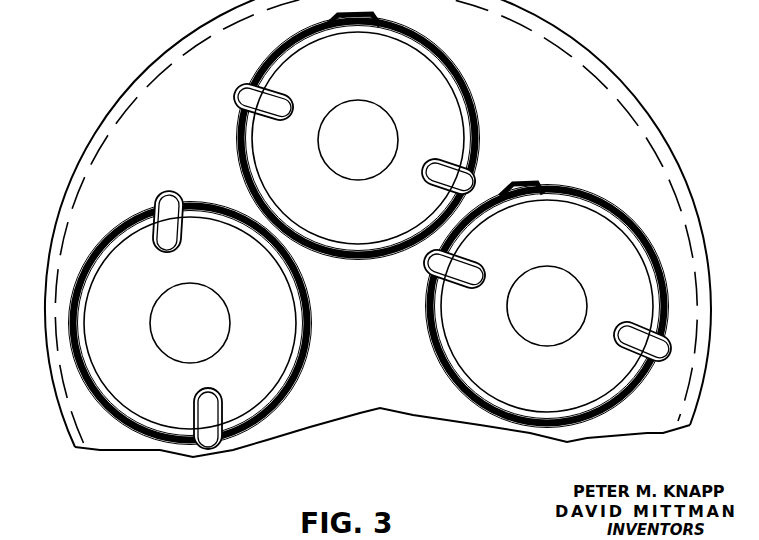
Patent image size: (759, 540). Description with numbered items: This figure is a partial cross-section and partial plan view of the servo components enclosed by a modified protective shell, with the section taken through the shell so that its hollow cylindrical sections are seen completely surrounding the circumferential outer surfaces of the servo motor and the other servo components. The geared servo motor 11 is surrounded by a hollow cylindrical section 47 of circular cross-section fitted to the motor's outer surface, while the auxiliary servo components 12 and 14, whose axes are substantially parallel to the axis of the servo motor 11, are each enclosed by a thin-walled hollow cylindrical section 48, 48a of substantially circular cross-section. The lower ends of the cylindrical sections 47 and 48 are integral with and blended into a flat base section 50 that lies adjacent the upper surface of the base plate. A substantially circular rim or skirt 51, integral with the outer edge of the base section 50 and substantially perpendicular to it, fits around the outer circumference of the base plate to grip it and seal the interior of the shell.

The geared servo motor 11 is at (272, 365).
The auxiliary servo component 12 is at (438, 112).
The auxiliary servo component 14 is at (592, 228).
The hollow cylindrical section 47 is at (97, 240).
The thin-walled hollow cylindrical section 48 is at (452, 64).
The thin-walled hollow cylindrical section 48a is at (580, 193).
The flat base section 50 is at (598, 102).
The rim or skirt 51 is at (645, 118).